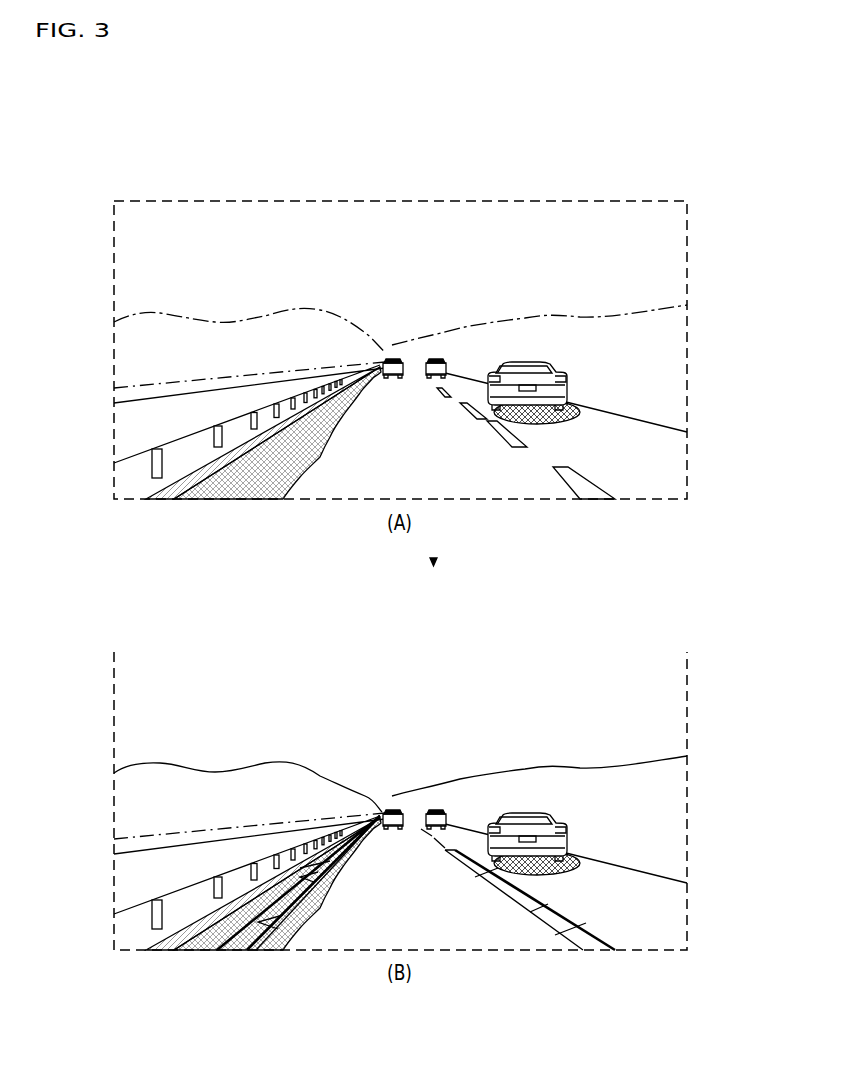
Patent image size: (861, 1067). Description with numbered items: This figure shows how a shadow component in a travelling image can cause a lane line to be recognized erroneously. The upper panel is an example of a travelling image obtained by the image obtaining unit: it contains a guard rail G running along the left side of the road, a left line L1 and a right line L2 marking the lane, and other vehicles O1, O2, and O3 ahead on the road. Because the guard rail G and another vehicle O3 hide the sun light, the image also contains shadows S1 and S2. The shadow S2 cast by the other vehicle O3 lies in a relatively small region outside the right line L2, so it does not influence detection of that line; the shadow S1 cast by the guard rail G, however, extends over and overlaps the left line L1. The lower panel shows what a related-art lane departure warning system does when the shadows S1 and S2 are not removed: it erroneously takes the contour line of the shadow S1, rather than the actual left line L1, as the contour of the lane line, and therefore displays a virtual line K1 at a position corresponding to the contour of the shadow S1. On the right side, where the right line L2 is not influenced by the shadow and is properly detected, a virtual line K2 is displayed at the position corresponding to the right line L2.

The other vehicle O1 is at (393, 482).
The other vehicle O2 is at (468, 482).
The other vehicle O3 is at (551, 498).
The shadow S2 is at (543, 416).
The guard rail G is at (142, 430).
The left line L1 is at (172, 489).
The right line L2 is at (578, 487).
The shadow S1 is at (283, 467).
The virtual line K1 is at (284, 917).
The virtual line K2 is at (580, 938).